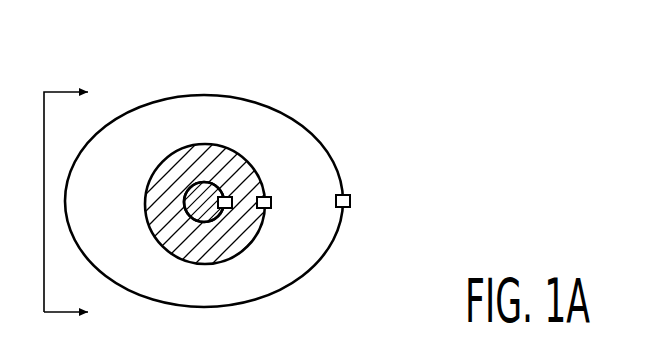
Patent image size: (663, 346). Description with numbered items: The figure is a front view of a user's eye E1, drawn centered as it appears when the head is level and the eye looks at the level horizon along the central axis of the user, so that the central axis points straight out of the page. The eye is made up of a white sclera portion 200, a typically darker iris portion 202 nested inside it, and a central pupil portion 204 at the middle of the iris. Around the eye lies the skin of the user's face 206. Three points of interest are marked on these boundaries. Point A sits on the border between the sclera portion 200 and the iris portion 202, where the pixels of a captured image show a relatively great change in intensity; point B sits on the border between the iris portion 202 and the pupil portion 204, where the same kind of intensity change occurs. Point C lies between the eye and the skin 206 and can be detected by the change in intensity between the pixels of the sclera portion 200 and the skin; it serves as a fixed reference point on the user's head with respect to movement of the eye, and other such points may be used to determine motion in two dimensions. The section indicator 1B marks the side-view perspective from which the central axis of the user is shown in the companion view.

The sclera portion 200 is at (317, 254).
The iris portion 202 is at (227, 158).
The pupil portion 204 is at (199, 192).
The skin of the user's face 206 is at (418, 155).
The point A is at (273, 197).
The point B is at (235, 207).
The point C is at (350, 201).
The eye E1 is at (320, 71).
The section line 1B- 1B is at (83, 202).